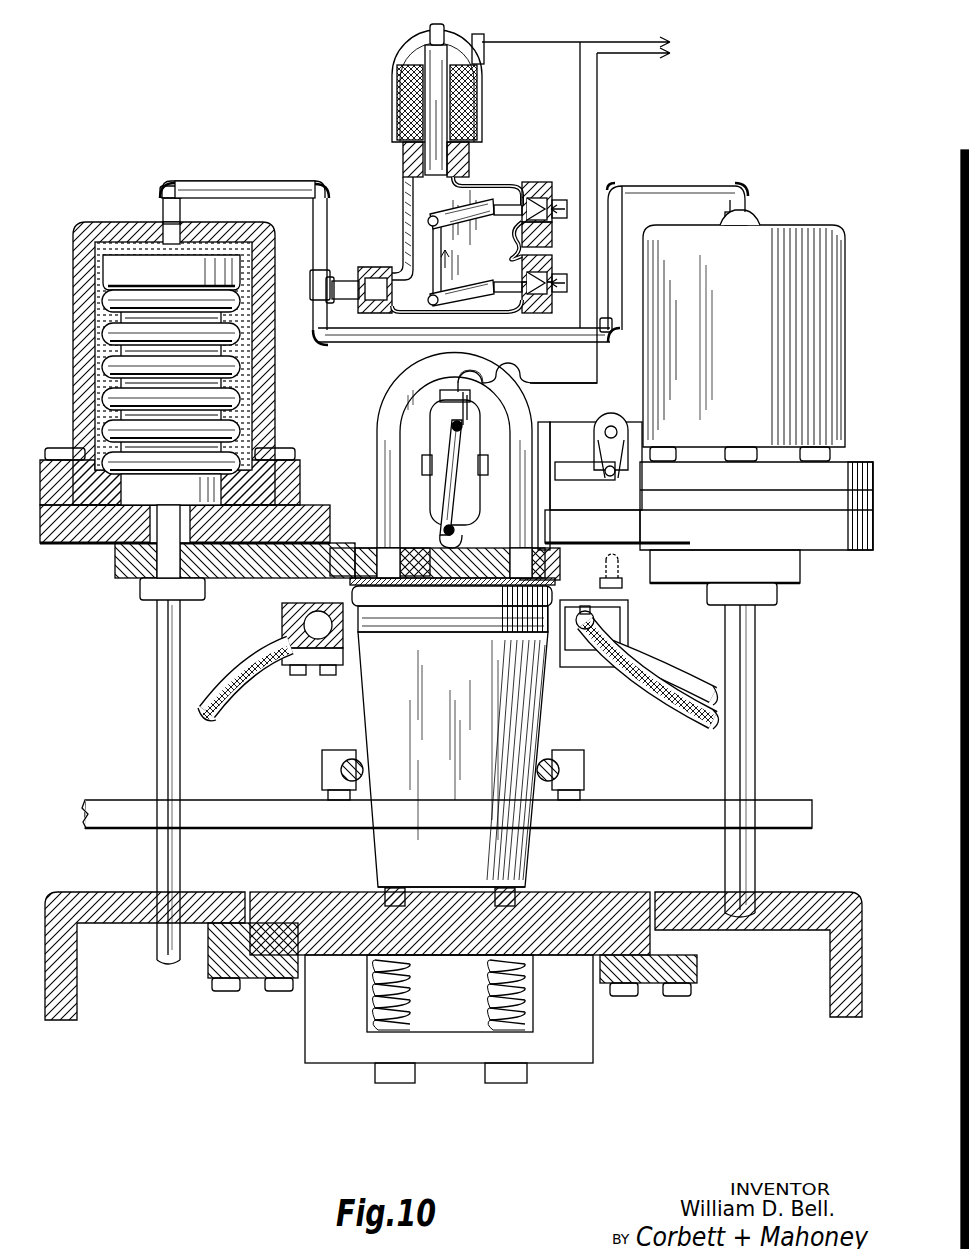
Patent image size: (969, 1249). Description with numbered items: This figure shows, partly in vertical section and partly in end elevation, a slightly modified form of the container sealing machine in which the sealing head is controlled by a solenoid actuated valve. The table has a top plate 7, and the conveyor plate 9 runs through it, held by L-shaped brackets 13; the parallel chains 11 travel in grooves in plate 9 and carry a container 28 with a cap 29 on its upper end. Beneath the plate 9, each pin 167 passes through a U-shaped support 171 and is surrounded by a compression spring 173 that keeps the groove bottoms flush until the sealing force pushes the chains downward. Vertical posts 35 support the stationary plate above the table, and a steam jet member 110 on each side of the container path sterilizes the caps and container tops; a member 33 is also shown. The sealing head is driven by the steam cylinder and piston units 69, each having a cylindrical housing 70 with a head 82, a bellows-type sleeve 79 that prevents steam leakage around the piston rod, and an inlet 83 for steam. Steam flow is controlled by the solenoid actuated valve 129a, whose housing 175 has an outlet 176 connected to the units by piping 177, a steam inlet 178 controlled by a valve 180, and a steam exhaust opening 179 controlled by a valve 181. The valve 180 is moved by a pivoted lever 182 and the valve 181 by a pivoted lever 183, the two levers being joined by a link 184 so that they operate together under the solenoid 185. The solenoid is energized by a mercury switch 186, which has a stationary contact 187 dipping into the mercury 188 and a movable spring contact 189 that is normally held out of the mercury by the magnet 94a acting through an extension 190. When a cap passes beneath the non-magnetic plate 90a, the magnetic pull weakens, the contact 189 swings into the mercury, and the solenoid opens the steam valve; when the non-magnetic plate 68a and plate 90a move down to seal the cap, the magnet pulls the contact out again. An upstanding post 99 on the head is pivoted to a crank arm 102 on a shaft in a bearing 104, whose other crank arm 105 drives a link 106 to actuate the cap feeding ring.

The top plate 7 is at (128, 893).
The longitudinally extending plate 9 is at (305, 893).
The chains 11 is at (523, 893).
The L-shaped brackets 13 is at (248, 985).
The container 28 is at (520, 695).
The cap 29 is at (393, 600).
The clamp 33 is at (582, 770).
The posts 35 is at (160, 687).
The plate 68a is at (258, 548).
The steam cylinder and piston units 69 is at (115, 222).
The cylindrical housing 70 is at (88, 350).
The bellows-type sleeve 79 is at (115, 300).
The head 82 is at (300, 478).
The inlet 83 is at (186, 224).
The plate 90a is at (465, 600).
The magnet 94a is at (395, 418).
The upstanding post 99 is at (590, 480).
The crank arm 102 is at (572, 425).
The bearing 104 is at (628, 428).
The crank arm 105 is at (618, 445).
The link 106 is at (616, 471).
The steam jet members 110 is at (325, 655).
The solenoid actuated valve 129a is at (403, 160).
The pin 167 is at (412, 1005).
The support 171 is at (325, 1015).
The compression spring 173 is at (412, 975).
The housing 175 is at (403, 198).
The outlet 176 is at (385, 278).
The piping 177 is at (345, 342).
The steam inlet 178 is at (558, 198).
The steam exhaust opening 179 is at (558, 278).
The valve 180 is at (518, 200).
The valve 181 is at (512, 262).
The pivoted lever 182 is at (458, 205).
The pivoted lever 183 is at (490, 268).
The link 184 is at (433, 288).
The solenoid 185 is at (478, 100).
The mercury switch 186 is at (470, 423).
The stationary contact 187 is at (468, 432).
The mercury 188 is at (460, 530).
The movable spring contact 189 is at (432, 438).
The extension 190 is at (402, 528).